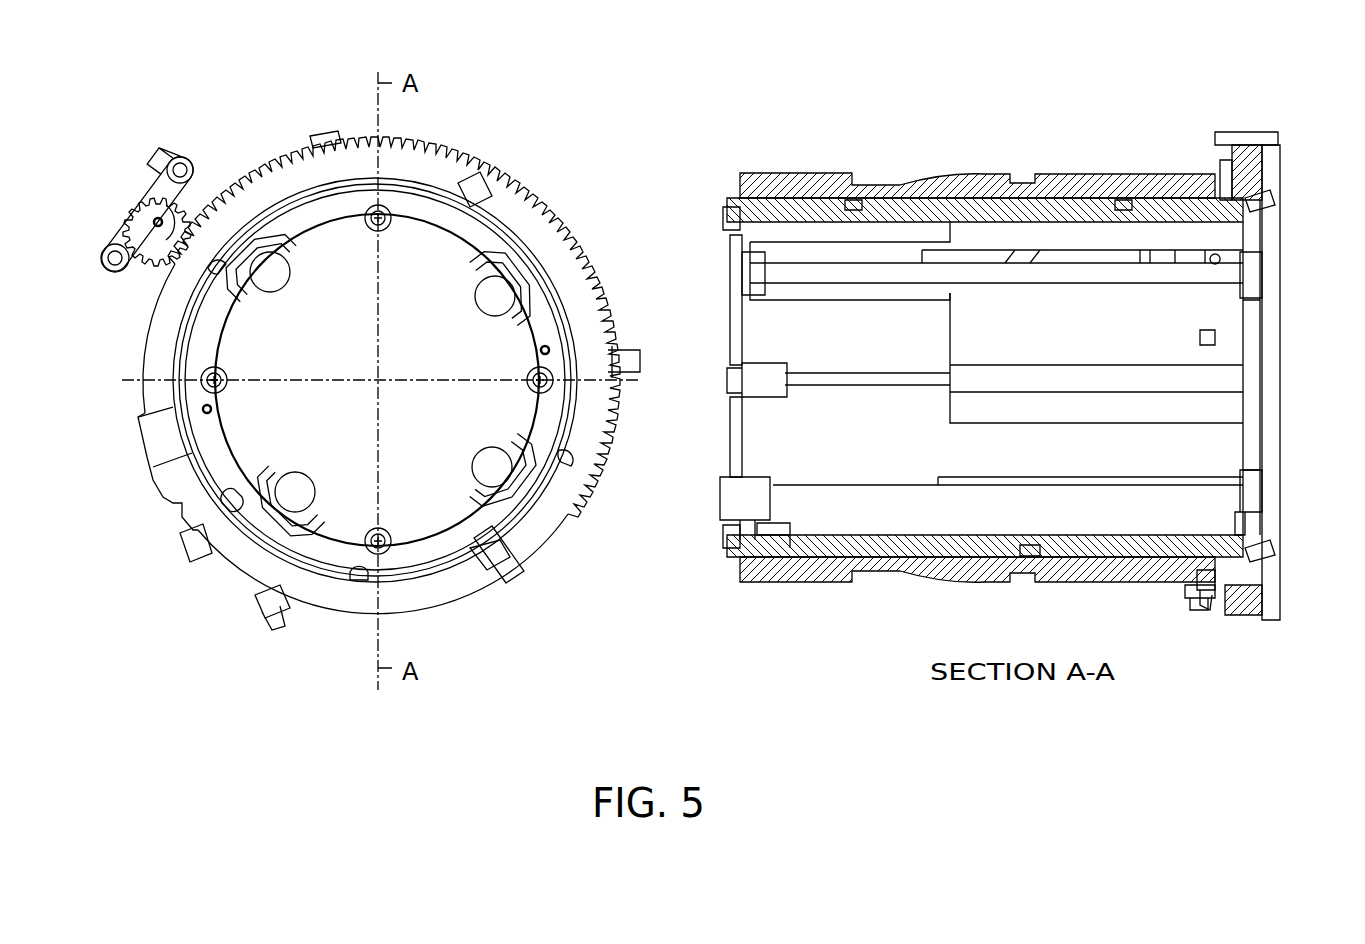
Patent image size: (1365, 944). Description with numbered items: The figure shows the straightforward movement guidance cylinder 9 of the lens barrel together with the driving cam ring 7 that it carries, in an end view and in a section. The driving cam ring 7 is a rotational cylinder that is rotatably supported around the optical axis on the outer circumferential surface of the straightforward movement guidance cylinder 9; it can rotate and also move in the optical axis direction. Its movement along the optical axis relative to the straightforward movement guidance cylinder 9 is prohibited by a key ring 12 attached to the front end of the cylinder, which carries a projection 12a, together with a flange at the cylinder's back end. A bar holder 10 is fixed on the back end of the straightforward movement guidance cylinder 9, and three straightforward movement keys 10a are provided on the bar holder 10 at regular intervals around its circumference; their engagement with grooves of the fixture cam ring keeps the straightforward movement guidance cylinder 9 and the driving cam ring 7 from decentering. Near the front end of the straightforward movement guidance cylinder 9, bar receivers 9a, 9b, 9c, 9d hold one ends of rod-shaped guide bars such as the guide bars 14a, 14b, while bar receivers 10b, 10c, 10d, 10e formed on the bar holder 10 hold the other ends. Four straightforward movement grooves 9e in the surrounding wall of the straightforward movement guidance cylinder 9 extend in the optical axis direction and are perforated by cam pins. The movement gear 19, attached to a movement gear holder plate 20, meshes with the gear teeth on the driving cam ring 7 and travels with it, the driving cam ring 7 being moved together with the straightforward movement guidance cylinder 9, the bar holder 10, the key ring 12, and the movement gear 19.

The driving cam ring 7 is at (440, 595).
The straightforward movement guidance cylinder 9 is at (787, 560).
The bar receiver 9a is at (298, 492).
The bar receiver 9b is at (273, 283).
The bar receiver 9c is at (485, 300).
The bar receiver 9d is at (482, 464).
The straightforward movement groove 9e is at (972, 245).
The bar holder 10 is at (1262, 580).
The straightforward movement key 10a is at (330, 131).
The bar receiver 10b is at (1305, 445).
The bar receiver 10c is at (1315, 310).
The bar receiver 10d is at (468, 306).
The bar receiver 10e is at (463, 475).
The key ring 12 is at (277, 537).
The projection of rotating ring 12a is at (475, 185).
The guide bar 14a is at (797, 493).
The guide bar 14b is at (745, 330).
The movement gear 19 is at (140, 195).
The movement gear holder plate 20 is at (112, 238).